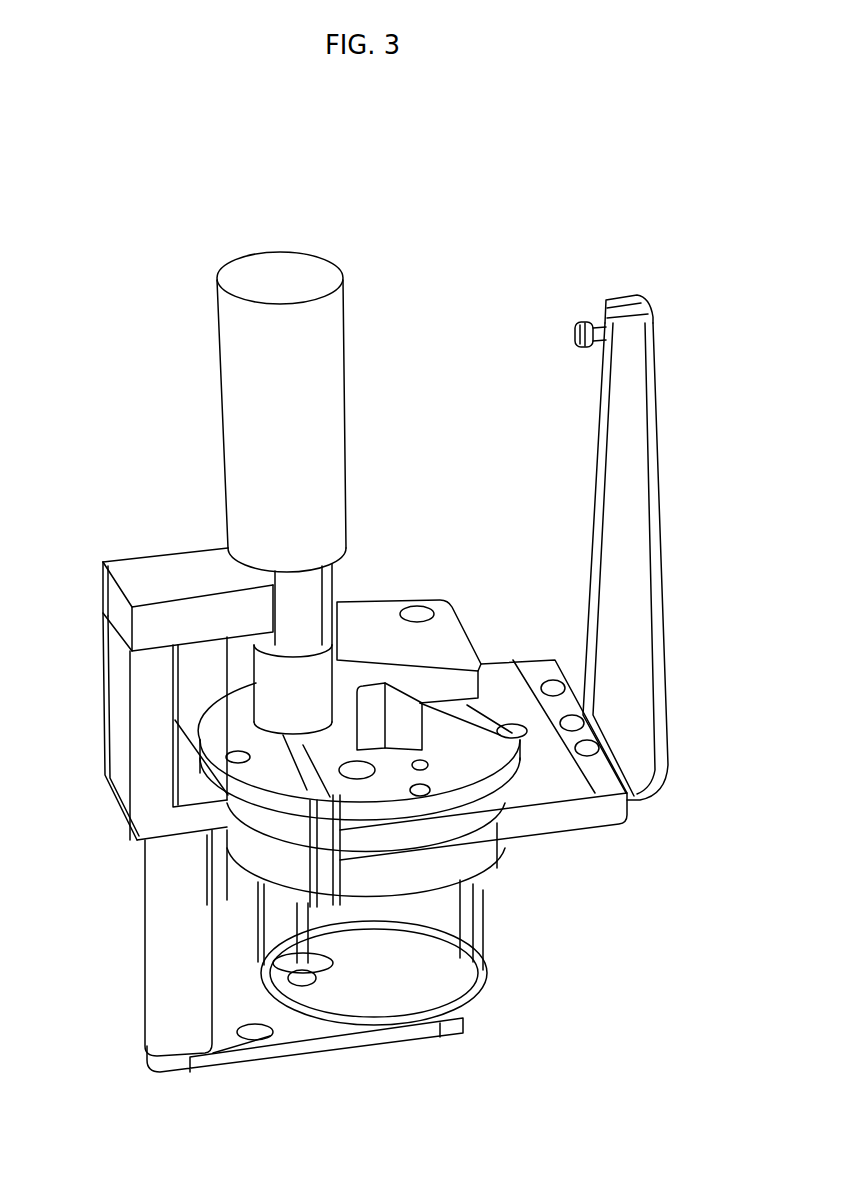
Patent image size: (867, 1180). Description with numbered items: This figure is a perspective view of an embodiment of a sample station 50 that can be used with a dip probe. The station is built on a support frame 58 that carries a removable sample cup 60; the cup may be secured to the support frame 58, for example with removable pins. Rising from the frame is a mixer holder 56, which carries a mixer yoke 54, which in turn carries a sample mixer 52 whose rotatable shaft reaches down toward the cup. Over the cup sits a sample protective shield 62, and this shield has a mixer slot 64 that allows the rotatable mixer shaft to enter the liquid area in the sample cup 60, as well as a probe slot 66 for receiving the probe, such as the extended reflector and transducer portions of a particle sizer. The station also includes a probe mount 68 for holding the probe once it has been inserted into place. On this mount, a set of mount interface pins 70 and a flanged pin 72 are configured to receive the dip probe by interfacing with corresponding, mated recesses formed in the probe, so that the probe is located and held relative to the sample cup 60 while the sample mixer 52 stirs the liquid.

The sample station 50 is at (710, 543).
The sample mixer 52 is at (335, 338).
The mixer yoke 54 is at (174, 575).
The mixer holder 56 is at (103, 645).
The support frame 58 is at (267, 1102).
The sample cup 60 is at (487, 968).
The sample protective shield 62 is at (453, 768).
The mixer slot 64 is at (320, 797).
The probe slot 66 is at (362, 723).
The probe mount 68 is at (662, 472).
The mount interface pins 70 is at (555, 660).
The flanged pin 72 is at (578, 332).